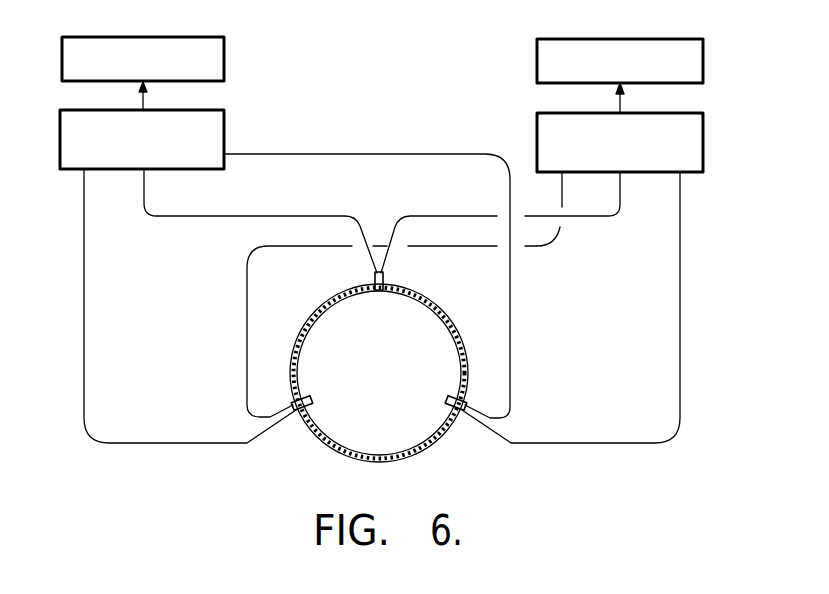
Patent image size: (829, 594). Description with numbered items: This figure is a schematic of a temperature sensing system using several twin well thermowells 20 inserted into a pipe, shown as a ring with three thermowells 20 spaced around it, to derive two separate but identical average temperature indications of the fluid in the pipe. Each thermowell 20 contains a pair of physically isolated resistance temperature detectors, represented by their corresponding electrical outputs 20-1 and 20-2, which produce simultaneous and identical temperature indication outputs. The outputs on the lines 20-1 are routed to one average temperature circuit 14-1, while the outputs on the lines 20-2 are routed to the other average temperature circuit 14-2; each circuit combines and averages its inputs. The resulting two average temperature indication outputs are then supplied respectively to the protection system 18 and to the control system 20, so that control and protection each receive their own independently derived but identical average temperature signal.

The thermowell 20 is at (100, 36).
The protection system 18 is at (553, 39).
The average temperature circuit 14-2 is at (225, 135).
The average temperature circuit 14-1 is at (537, 136).
The electrical outputs 20-2 is at (368, 255).
The electrical outputs 20-1 is at (391, 252).